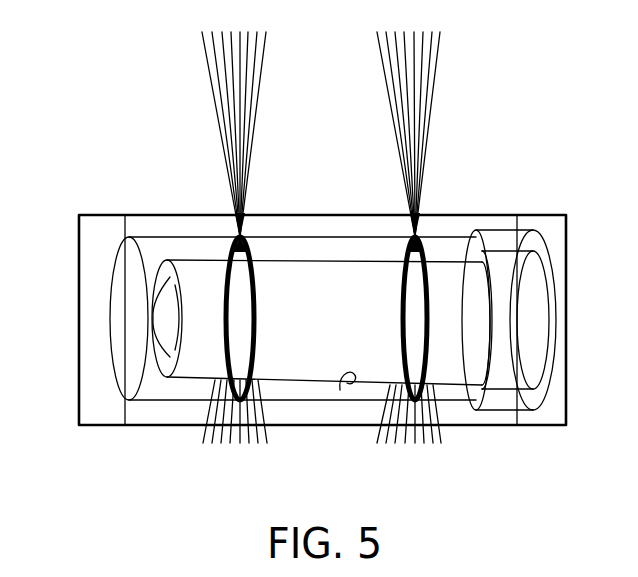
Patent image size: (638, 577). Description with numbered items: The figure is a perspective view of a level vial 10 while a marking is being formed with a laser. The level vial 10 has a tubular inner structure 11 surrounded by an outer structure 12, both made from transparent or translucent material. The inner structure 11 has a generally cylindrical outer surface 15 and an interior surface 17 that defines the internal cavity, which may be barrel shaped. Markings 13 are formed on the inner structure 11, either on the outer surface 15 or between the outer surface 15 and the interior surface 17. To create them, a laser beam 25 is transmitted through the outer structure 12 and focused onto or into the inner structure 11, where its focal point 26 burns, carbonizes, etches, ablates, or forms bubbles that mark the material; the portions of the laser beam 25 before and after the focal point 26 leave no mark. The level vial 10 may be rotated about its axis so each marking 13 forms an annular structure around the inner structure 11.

The level vial 10 is at (147, 90).
The inner structure 11 is at (155, 265).
The outer structure 12 is at (165, 413).
The markings 13 is at (257, 300).
The outer surface 15 is at (343, 237).
The interior surface 17 is at (340, 390).
The laser beam 25 is at (259, 89).
The focal point 26 is at (240, 237).